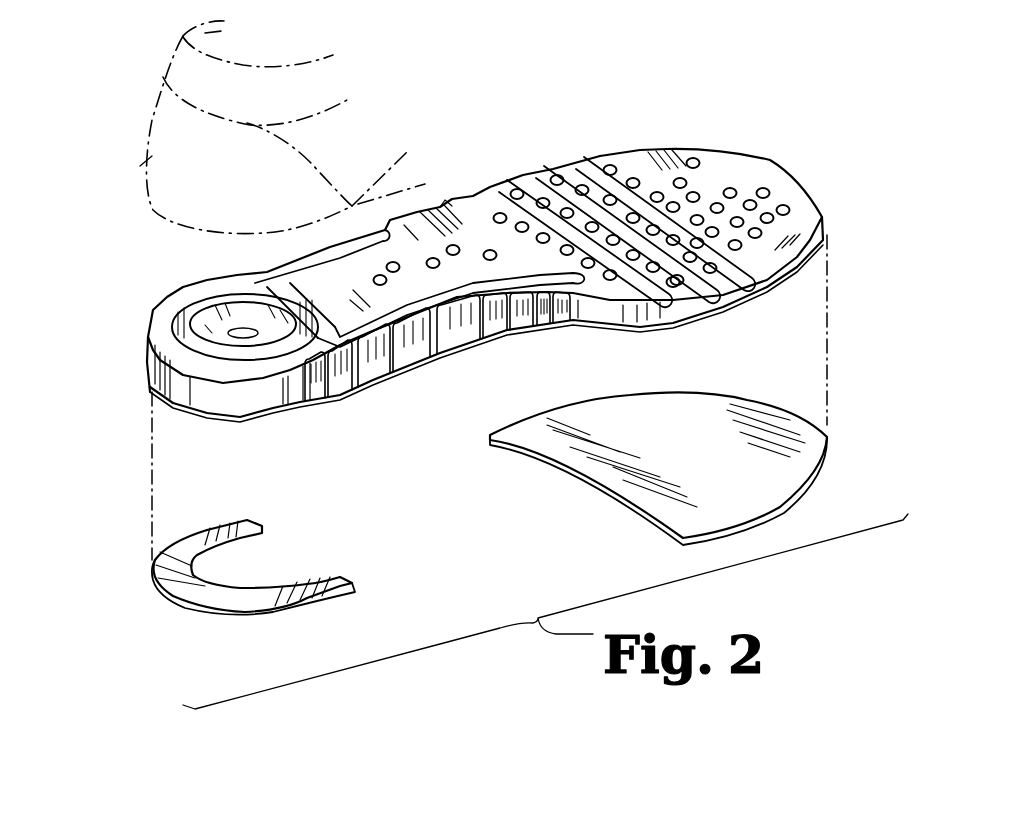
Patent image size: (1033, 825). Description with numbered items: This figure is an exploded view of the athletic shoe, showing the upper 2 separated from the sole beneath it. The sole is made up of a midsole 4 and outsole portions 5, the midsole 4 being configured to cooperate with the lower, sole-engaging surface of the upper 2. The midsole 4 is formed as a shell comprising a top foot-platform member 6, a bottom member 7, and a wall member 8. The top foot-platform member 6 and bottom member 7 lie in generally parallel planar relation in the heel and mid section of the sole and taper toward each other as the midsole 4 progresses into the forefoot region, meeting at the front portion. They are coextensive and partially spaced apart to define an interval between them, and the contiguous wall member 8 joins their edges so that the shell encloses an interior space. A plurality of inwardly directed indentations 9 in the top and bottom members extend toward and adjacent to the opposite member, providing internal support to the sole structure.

The upper 2 is at (150, 158).
The midsole 4 is at (721, 152).
The outsole portions 5 is at (822, 420).
The top foot-platform member 6 is at (450, 209).
The bottom member 7 is at (212, 416).
The wall member 8 is at (250, 400).
The indentations 9 is at (514, 189).